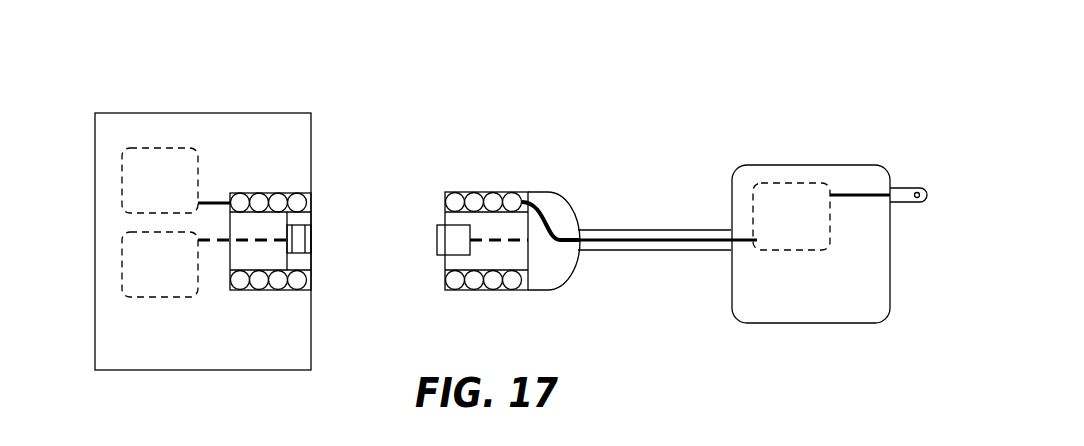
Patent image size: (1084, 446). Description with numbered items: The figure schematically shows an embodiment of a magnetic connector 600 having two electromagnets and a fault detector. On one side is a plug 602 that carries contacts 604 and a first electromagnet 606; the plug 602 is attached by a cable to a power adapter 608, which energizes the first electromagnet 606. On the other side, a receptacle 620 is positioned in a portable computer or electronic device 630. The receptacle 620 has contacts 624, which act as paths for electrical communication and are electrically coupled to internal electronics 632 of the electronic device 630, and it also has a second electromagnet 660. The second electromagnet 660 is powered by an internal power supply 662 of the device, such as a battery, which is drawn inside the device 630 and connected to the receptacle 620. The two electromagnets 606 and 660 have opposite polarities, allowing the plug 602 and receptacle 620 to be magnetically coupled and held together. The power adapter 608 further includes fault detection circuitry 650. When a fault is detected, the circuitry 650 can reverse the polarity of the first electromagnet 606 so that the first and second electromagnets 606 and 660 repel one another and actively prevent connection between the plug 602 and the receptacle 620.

The magnetic connector 600 is at (636, 116).
The plug 602 is at (494, 223).
The contacts 604 is at (436, 240).
The first electromagnet 606 is at (470, 192).
The power adapter 608 is at (829, 225).
The receptacle 620 is at (312, 244).
The contacts 624 is at (327, 247).
The electronic device 630 is at (112, 113).
The internal electronics 632 is at (207, 264).
The fault detection circuitry 650 is at (826, 165).
The second electromagnet 660 is at (312, 204).
The internal power supply 662 is at (176, 180).